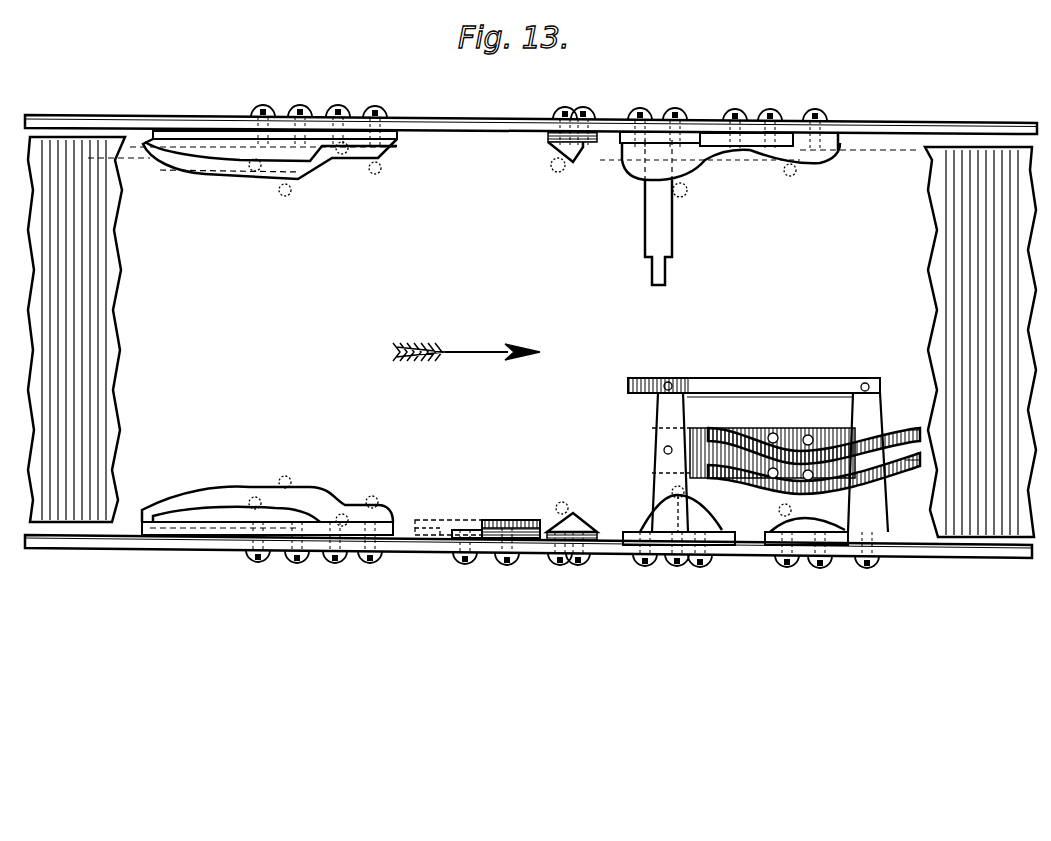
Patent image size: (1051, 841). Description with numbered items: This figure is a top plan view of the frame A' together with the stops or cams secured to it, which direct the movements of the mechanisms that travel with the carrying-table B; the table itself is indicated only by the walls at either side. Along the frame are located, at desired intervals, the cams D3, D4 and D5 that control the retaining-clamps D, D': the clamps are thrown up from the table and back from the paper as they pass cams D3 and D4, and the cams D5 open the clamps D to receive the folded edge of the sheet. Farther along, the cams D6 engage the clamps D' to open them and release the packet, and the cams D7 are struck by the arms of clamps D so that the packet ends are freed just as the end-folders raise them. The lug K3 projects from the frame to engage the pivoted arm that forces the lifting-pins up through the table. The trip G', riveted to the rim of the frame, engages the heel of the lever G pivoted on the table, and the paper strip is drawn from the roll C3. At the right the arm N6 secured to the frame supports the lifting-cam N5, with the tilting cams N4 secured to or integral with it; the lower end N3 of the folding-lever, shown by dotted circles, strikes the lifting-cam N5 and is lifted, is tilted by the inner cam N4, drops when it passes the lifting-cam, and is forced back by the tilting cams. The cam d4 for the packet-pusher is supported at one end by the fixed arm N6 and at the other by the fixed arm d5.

The frame A' is at (531, 332).
The carrying-table B is at (113, 340).
The retaining-clamp D is at (518, 334).
The retaining-clamp D' is at (499, 335).
The cam D3 is at (215, 143).
The cam D4 is at (233, 176).
The cam D5 is at (572, 160).
The cam D6 is at (700, 170).
The cam D7 is at (812, 165).
The lug K3 is at (666, 268).
The lever G is at (448, 512).
The trip G' is at (467, 513).
The roll C3 is at (514, 524).
The cam d4 is at (638, 378).
The fixed arm d5 is at (877, 410).
The lower end of folding-lever N3 is at (745, 440).
The tilting cam N4 is at (908, 430).
The lifting-cam N5 is at (728, 420).
The arm N6 is at (660, 433).